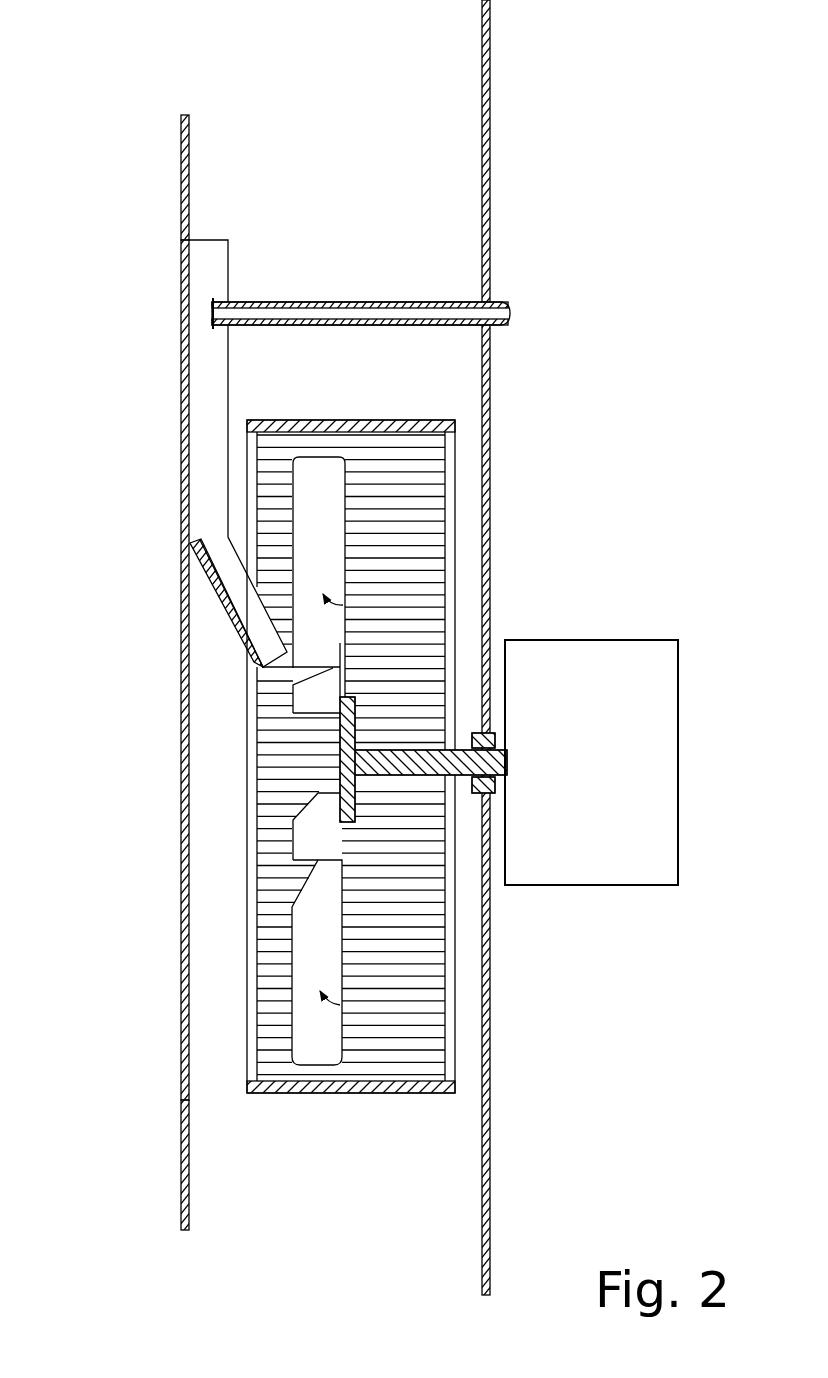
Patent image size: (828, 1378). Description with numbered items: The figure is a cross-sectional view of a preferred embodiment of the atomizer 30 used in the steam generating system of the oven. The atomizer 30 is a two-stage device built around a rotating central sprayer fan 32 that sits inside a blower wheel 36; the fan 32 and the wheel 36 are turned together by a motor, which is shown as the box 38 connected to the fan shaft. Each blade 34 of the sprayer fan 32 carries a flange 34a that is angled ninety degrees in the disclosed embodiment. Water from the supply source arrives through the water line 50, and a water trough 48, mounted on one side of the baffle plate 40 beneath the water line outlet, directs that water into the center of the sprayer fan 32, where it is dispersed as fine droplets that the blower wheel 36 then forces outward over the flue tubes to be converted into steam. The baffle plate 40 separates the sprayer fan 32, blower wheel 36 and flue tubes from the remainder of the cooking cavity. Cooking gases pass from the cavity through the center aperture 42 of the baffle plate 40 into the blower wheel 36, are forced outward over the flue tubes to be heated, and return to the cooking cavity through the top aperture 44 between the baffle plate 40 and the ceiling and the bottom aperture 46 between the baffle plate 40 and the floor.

The atomizer 30 is at (237, 762).
The sprayer fan 32 is at (294, 804).
The fan blade 34 is at (363, 610).
The flange 34a is at (328, 498).
The blower wheel 36 is at (422, 557).
The motor 38 is at (600, 780).
The baffle plate 40 is at (181, 227).
The center aperture 42 is at (177, 670).
The top aperture 44 is at (222, 46).
The bottom aperture 46 is at (207, 1258).
The water trough 48 is at (205, 413).
The water line 50 is at (433, 303).